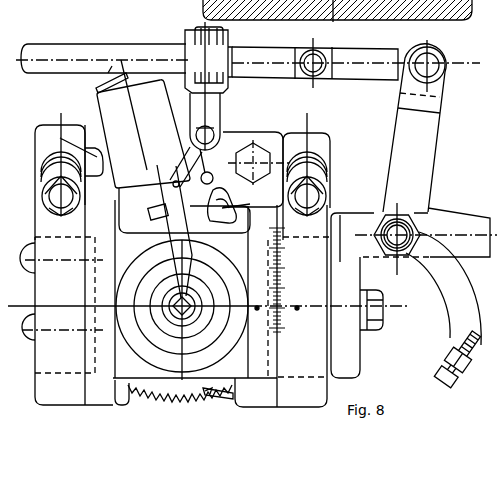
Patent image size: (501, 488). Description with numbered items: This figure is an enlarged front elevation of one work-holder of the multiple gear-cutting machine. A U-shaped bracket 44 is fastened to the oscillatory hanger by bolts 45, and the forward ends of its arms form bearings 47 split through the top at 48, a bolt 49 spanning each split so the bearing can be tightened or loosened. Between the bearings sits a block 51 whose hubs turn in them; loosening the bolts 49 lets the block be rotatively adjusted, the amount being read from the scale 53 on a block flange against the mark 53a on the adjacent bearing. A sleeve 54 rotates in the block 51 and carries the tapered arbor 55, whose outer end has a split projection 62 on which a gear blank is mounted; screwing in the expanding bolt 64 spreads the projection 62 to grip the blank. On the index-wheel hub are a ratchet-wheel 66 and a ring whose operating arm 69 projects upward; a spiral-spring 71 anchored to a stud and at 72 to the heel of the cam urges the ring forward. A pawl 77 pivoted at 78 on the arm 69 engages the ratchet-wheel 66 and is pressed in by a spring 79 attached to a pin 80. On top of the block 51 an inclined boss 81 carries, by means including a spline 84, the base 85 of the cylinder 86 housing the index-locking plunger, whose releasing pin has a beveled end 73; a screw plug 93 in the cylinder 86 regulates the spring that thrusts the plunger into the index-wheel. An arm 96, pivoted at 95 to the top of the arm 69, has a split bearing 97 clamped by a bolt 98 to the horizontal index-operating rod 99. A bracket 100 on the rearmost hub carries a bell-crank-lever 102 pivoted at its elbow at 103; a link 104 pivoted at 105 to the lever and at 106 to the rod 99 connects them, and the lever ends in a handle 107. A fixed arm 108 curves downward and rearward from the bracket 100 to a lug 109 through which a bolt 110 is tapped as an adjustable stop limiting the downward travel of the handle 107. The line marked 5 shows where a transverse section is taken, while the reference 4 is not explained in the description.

The frame 4 is at (53, 332).
The section line 5 is at (35, 304).
The U-shaped bracket 44 is at (240, 141).
The bolt 45 is at (258, 161).
The bearing 47 is at (57, 233).
The split 48 is at (41, 175).
The bolt 49 is at (322, 190).
The block 51 is at (125, 362).
The scale 53 is at (281, 266).
The mark 53a is at (298, 311).
The sleeve 54 is at (150, 308).
The arbor 55 is at (80, 350).
The split projection 62 is at (167, 333).
The expanding bolt 64 is at (200, 332).
The ratchet-wheel 66 is at (193, 400).
The operating arm 69 is at (212, 162).
The spiral-spring 71 is at (168, 400).
The spring attachment 72 is at (323, 20).
The beveled end 73 is at (337, 10).
The pawl 77 is at (215, 213).
The pivot 78 is at (176, 180).
The spring 79 is at (222, 208).
The pin 80 is at (180, 157).
The boss 81 is at (184, 210).
The spline 84 is at (182, 310).
The base 85 is at (165, 231).
The cylinder 86 is at (143, 124).
The screw cap or plug 93 is at (110, 80).
The pivot 95 is at (223, 112).
The arm 96 is at (205, 133).
The split bearing 97 is at (186, 35).
The bolt 98 is at (232, 37).
The index-actuating rod 99 is at (84, 55).
The bracket 100 is at (343, 353).
The bell-crank-lever 102 is at (413, 158).
The pivot 103 is at (398, 262).
The link 104 is at (366, 68).
The pivot 105 is at (441, 57).
The pivot 106 is at (307, 78).
The handle 107 is at (478, 247).
The fixed arm 108 is at (462, 315).
The lug 109 is at (477, 335).
The stop bolt 110 is at (432, 391).